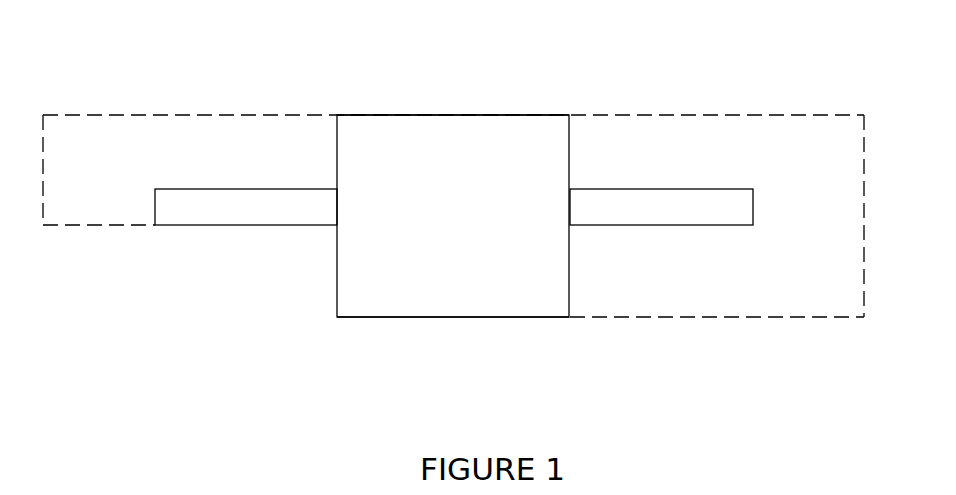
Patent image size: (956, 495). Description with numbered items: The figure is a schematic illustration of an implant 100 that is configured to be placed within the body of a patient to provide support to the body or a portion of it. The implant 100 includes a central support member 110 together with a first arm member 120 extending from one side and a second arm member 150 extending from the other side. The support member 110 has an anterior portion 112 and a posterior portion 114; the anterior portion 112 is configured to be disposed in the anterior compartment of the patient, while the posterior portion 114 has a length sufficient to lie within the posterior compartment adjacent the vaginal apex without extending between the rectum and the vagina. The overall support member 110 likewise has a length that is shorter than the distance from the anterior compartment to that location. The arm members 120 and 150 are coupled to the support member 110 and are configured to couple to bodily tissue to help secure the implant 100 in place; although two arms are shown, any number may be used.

The implant 100 is at (150, 55).
The support member 110 is at (510, 142).
The anterior portion 112 is at (389, 304).
The posterior portion 114 is at (375, 128).
The first arm member 120 is at (243, 225).
The second arm member 150 is at (637, 202).